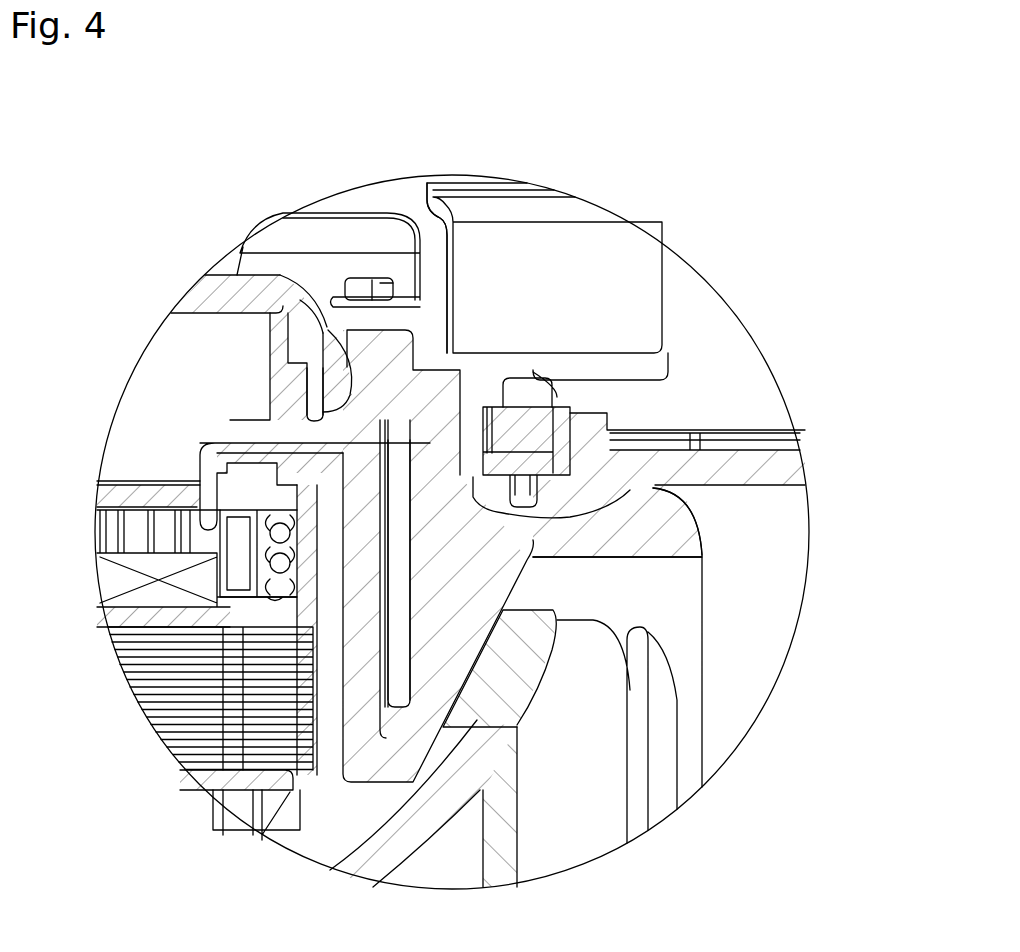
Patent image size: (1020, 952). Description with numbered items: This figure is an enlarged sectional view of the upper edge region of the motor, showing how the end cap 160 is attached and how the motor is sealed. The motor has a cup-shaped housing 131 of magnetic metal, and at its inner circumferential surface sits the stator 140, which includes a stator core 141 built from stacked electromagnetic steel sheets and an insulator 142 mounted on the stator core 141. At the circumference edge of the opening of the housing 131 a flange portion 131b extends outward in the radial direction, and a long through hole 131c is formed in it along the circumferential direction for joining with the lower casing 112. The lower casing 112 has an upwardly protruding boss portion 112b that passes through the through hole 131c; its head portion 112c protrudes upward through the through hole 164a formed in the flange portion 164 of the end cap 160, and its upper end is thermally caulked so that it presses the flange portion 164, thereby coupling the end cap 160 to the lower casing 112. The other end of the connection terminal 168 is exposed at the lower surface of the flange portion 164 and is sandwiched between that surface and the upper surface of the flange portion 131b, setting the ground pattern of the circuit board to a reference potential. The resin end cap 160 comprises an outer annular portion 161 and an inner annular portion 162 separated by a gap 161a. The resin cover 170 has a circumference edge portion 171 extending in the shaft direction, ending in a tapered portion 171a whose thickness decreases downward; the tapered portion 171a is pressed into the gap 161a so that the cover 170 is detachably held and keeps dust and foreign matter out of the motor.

The lower casing 112 is at (790, 477).
The boss portion 112b is at (460, 430).
The head portion 112c is at (450, 355).
The housing 131 is at (370, 552).
The flange portion 131b is at (347, 400).
The through hole 131c is at (537, 478).
The stator 140 is at (290, 690).
The stator core 141 is at (287, 735).
The insulator 142 is at (290, 613).
The end cap 160 is at (336, 344).
The outer annular portion 161 is at (393, 390).
The gap 161a is at (333, 320).
The inner annular portion 162 is at (268, 365).
The flange portion 164 is at (560, 425).
The through hole 164a is at (473, 373).
The connection terminal 168 is at (205, 446).
The cover 170 is at (222, 283).
The circumference edge portion 171 is at (292, 275).
The tapered portion 171a is at (308, 405).